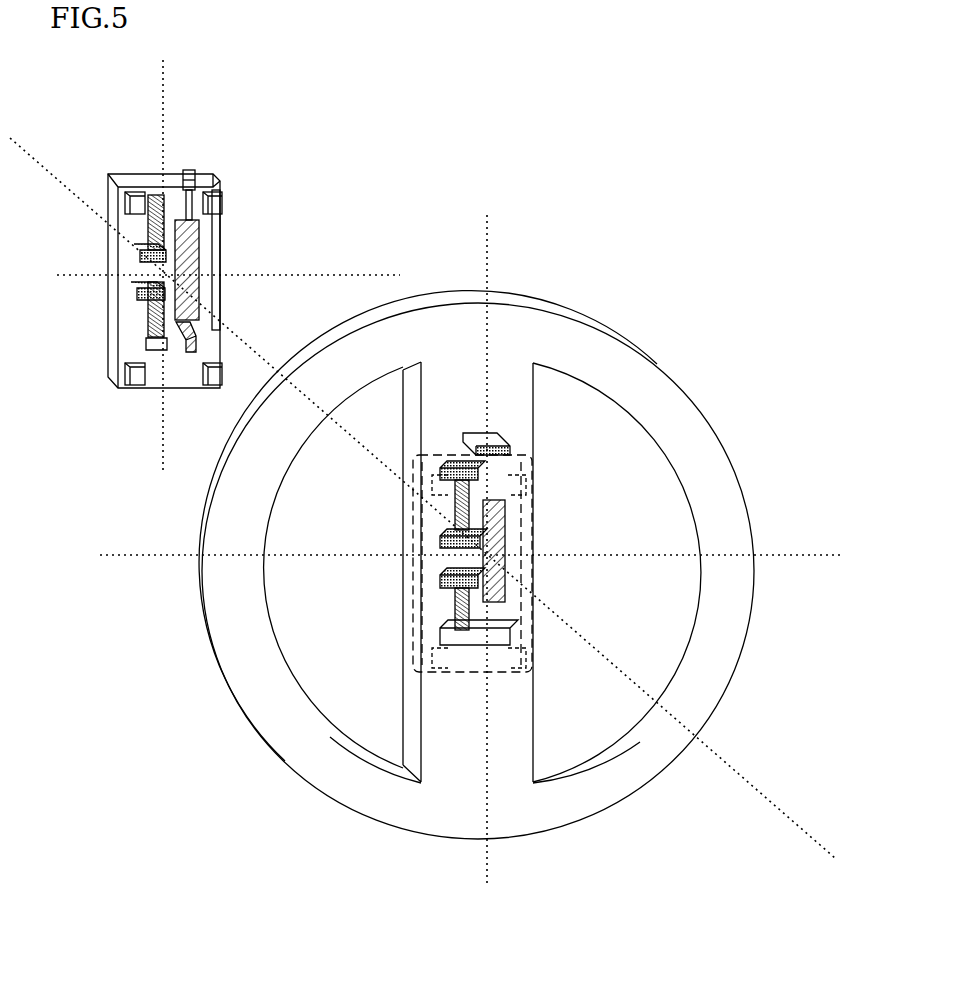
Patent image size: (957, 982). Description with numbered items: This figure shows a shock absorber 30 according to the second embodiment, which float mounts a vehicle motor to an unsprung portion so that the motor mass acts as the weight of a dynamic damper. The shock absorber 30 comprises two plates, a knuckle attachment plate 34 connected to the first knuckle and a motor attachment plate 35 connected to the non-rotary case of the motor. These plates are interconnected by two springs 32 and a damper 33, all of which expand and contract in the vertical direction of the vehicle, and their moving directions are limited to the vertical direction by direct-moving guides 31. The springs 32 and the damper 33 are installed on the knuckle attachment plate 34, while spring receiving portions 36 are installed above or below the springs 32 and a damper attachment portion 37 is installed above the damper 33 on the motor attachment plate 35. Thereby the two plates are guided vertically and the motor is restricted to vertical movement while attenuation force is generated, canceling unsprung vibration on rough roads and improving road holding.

The shock absorber 30 is at (476, 467).
The direct-moving guide 31 is at (112, 177).
The spring 32 is at (148, 223).
The damper 33 is at (204, 258).
The knuckle attachment plate 34 is at (221, 243).
The motor attachment plate 35 is at (612, 358).
The spring receiving portion 36 is at (457, 470).
The damper attachment portion 37 is at (507, 443).